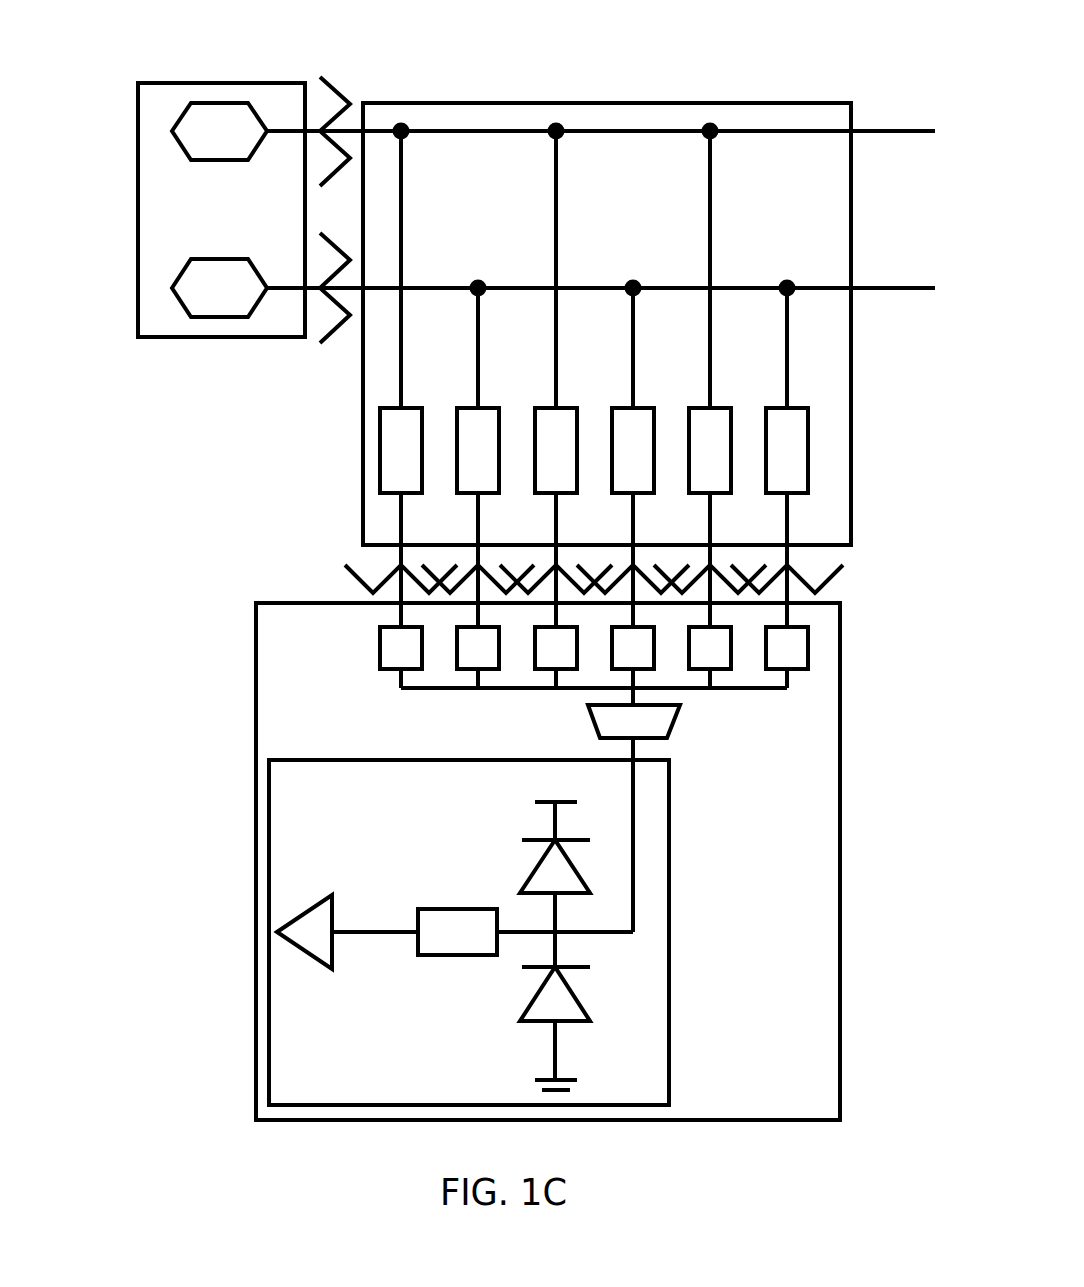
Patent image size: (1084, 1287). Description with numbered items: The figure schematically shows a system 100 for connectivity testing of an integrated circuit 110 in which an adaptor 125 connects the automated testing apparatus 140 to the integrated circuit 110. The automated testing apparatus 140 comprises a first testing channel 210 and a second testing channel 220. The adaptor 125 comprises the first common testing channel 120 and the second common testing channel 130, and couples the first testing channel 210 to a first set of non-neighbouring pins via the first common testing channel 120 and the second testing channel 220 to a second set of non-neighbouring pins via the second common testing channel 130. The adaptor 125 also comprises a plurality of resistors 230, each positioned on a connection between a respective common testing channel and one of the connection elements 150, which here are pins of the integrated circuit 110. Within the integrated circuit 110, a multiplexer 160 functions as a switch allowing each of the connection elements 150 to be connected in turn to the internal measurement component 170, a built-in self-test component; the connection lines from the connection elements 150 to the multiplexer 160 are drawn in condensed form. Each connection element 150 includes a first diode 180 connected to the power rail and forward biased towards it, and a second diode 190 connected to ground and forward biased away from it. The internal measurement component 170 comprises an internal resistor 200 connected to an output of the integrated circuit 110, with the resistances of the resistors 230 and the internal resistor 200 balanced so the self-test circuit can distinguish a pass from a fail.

The system 100 is at (248, 476).
The integrated circuit 110 is at (840, 885).
The first common testing channel 120 is at (521, 287).
The adaptor 125 is at (765, 103).
The second common testing channel 130 is at (479, 130).
The automated testing apparatus 140 is at (138, 210).
The connection elements 150 is at (810, 645).
The multiplexer 160 is at (676, 720).
The internal measurement component 170 is at (669, 950).
The first diode 180 is at (530, 872).
The second diode 190 is at (590, 1021).
The internal resistor 200 is at (457, 956).
The first testing channel 210 is at (222, 318).
The second testing channel 220 is at (218, 103).
The resistors 230 is at (810, 448).